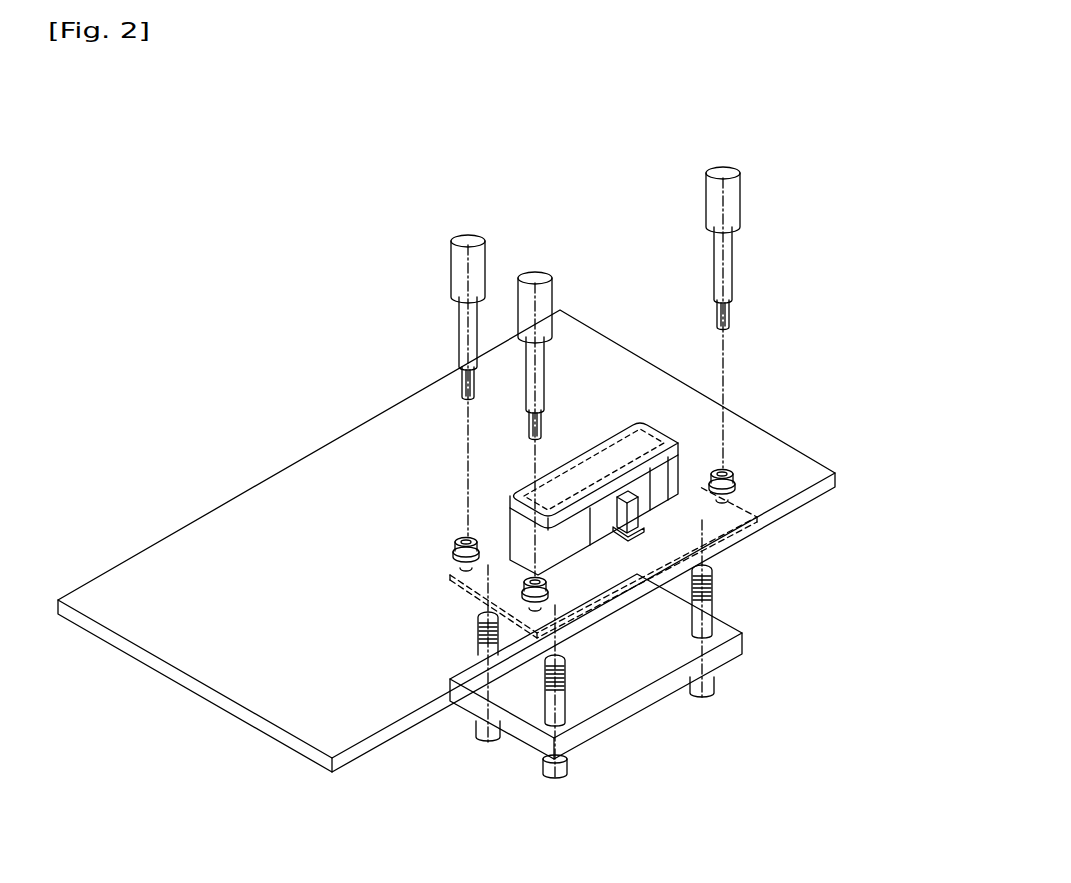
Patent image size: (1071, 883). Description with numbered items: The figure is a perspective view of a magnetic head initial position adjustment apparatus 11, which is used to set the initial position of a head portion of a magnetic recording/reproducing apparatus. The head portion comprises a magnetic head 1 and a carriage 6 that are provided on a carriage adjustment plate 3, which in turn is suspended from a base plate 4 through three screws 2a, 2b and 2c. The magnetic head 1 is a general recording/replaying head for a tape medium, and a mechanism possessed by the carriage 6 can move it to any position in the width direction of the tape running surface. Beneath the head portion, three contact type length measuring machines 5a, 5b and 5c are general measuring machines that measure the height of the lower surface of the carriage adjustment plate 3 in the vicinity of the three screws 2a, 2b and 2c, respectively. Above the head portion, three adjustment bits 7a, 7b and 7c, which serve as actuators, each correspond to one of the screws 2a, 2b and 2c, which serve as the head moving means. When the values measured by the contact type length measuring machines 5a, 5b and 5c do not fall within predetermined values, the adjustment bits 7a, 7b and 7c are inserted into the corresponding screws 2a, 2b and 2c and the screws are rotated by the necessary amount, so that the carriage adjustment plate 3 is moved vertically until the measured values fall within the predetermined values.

The magnetic head initial position adjustment apparatus 11 is at (287, 338).
The magnetic head 1 is at (580, 392).
The screw 2a is at (527, 580).
The screw 2b is at (723, 470).
The screw 2c is at (461, 539).
The carriage adjustment plate 3 is at (740, 487).
The base plate 4 is at (224, 533).
The contact type length measuring machine 5a is at (547, 710).
The contact type length measuring machine 5b is at (710, 600).
The contact type length measuring machine 5c is at (478, 648).
The carriage 6 is at (553, 482).
The adjustment bit 7a is at (527, 370).
The adjustment bit 7b is at (713, 310).
The adjustment bit 7c is at (460, 374).